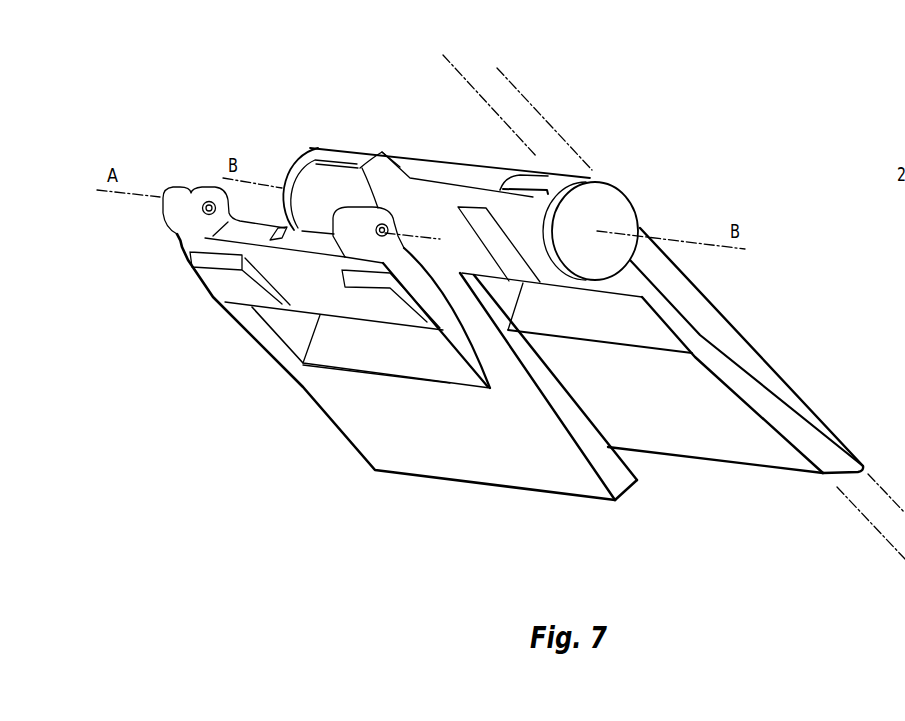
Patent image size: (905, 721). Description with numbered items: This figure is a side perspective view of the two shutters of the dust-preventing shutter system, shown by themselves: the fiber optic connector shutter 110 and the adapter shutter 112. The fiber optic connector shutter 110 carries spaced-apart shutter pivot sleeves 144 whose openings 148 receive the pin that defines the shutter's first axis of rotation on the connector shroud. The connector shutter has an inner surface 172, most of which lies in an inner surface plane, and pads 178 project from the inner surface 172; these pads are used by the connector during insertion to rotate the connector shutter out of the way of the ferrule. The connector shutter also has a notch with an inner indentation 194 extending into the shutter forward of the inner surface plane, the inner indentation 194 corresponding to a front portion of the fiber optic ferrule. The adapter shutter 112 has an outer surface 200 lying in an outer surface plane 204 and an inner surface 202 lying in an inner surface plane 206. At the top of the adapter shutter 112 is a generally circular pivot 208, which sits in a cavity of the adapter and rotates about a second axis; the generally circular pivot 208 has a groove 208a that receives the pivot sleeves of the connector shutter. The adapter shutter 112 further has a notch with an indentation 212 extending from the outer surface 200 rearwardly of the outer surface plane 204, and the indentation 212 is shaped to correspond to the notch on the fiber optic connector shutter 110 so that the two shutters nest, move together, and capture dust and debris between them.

The fiber optic connector shutter 110 is at (468, 484).
The adapter shutter 112 is at (820, 417).
The shutter pivot sleeves 144 is at (187, 195).
The openings 148 is at (209, 202).
The inner surface 172 is at (469, 443).
The pads 178 is at (218, 285).
The inner indentation 194 is at (325, 358).
The outer surface 200 is at (735, 453).
The inner surface 202 is at (763, 360).
The outer surface plane 204 is at (503, 71).
The inner surface plane 206 is at (447, 56).
The generally circular pivot 208 is at (623, 203).
The groove 208a is at (327, 185).
The indentation 212 is at (655, 320).